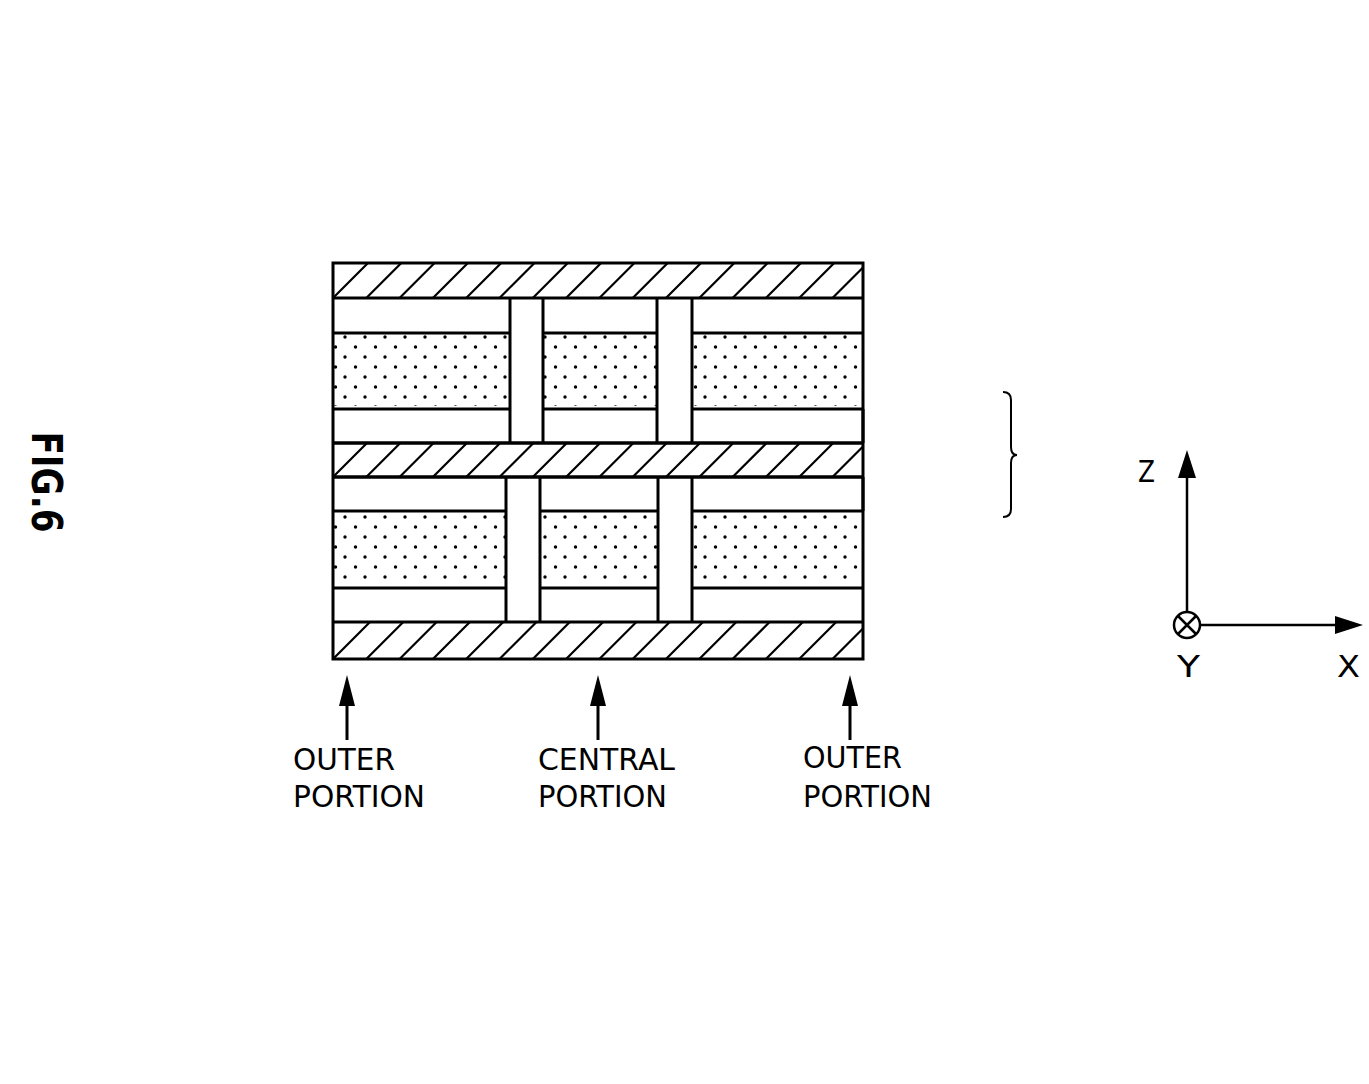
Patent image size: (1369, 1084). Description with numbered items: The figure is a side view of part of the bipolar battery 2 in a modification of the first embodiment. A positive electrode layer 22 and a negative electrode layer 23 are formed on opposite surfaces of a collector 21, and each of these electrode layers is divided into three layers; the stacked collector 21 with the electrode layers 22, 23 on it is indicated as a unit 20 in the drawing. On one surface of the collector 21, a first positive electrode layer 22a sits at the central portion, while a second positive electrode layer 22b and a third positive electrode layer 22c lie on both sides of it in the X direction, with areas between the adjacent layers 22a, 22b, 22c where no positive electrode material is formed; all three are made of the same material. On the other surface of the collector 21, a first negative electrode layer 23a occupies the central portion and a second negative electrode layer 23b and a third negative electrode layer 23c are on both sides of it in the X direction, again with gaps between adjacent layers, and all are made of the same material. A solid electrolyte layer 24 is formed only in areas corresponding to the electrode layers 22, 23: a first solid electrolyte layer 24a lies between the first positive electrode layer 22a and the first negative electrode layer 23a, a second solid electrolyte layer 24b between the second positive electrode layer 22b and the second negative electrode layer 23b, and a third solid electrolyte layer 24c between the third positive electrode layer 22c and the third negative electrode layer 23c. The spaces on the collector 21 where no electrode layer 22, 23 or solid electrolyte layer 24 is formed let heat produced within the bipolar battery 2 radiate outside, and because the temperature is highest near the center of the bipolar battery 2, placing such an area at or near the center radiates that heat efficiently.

The bipolar battery 2 is at (834, 248).
The unit laminate 20 is at (1035, 454).
The collector 21 is at (335, 284).
The positive electrode layer 22 is at (883, 422).
The first positive electrode layer 22a is at (560, 422).
The second positive electrode layer 22b is at (357, 427).
The third positive electrode layer 22c is at (777, 420).
The negative electrode layer 23 is at (888, 317).
The first negative electrode layer 23a is at (568, 490).
The second negative electrode layer 23b is at (357, 502).
The third negative electrode layer 23c is at (803, 497).
The solid electrolyte layer 24 is at (888, 362).
The first solid electrolyte layer 24a is at (560, 573).
The second solid electrolyte layer 24b is at (441, 575).
The third solid electrolyte layer 24c is at (752, 572).